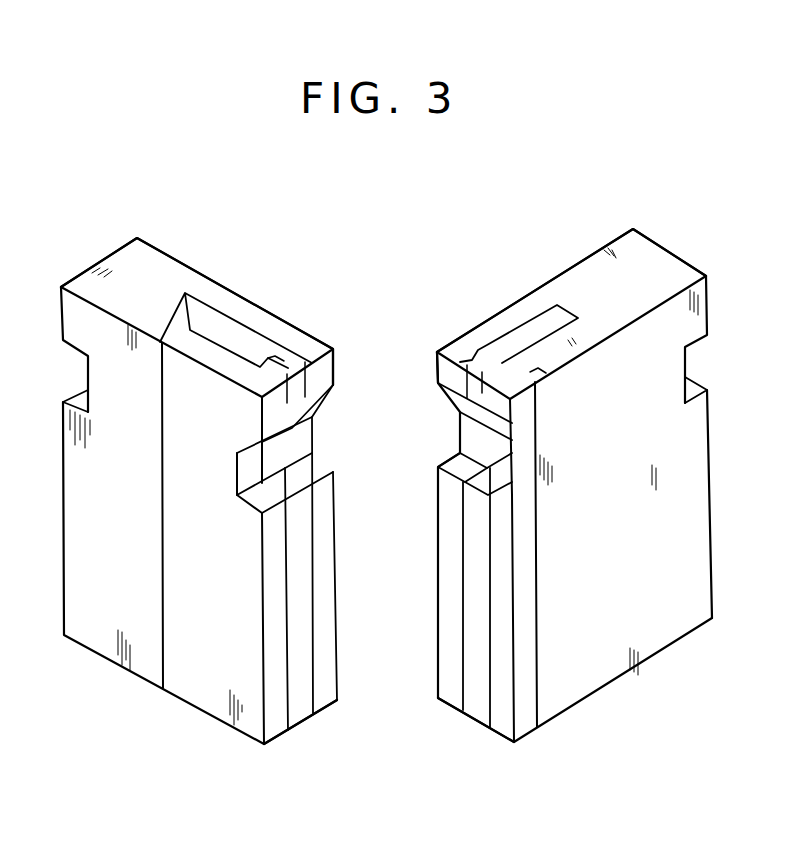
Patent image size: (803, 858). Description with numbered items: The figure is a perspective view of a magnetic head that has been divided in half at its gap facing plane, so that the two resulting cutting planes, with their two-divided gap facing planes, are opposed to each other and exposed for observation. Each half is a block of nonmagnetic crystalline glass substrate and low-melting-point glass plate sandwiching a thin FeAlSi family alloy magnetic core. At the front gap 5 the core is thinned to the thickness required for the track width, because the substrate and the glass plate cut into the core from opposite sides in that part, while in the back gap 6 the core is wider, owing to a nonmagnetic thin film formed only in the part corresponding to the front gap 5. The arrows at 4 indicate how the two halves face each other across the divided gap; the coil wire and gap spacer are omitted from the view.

The joint / connecting direction 4 is at (447, 441).
The front gap 5 is at (428, 349).
The back gap 6 is at (424, 699).